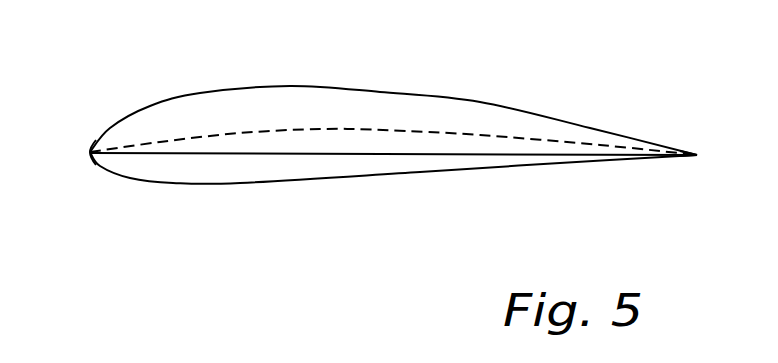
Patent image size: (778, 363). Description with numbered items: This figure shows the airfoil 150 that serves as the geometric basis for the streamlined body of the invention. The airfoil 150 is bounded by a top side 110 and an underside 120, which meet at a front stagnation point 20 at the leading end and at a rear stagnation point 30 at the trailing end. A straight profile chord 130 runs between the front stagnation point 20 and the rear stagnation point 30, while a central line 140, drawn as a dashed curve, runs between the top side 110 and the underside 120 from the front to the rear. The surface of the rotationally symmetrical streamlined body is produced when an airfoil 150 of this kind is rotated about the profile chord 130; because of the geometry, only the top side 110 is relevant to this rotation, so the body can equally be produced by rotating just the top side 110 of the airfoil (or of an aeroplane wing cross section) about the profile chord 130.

The front stagnation point 20 is at (90, 152).
The rear stagnation point 30 is at (697, 155).
The top side 110 is at (180, 97).
The underside 120 is at (173, 183).
The profile chord 130 is at (422, 155).
The central line 140 is at (384, 130).
The airfoil 150 is at (493, 93).